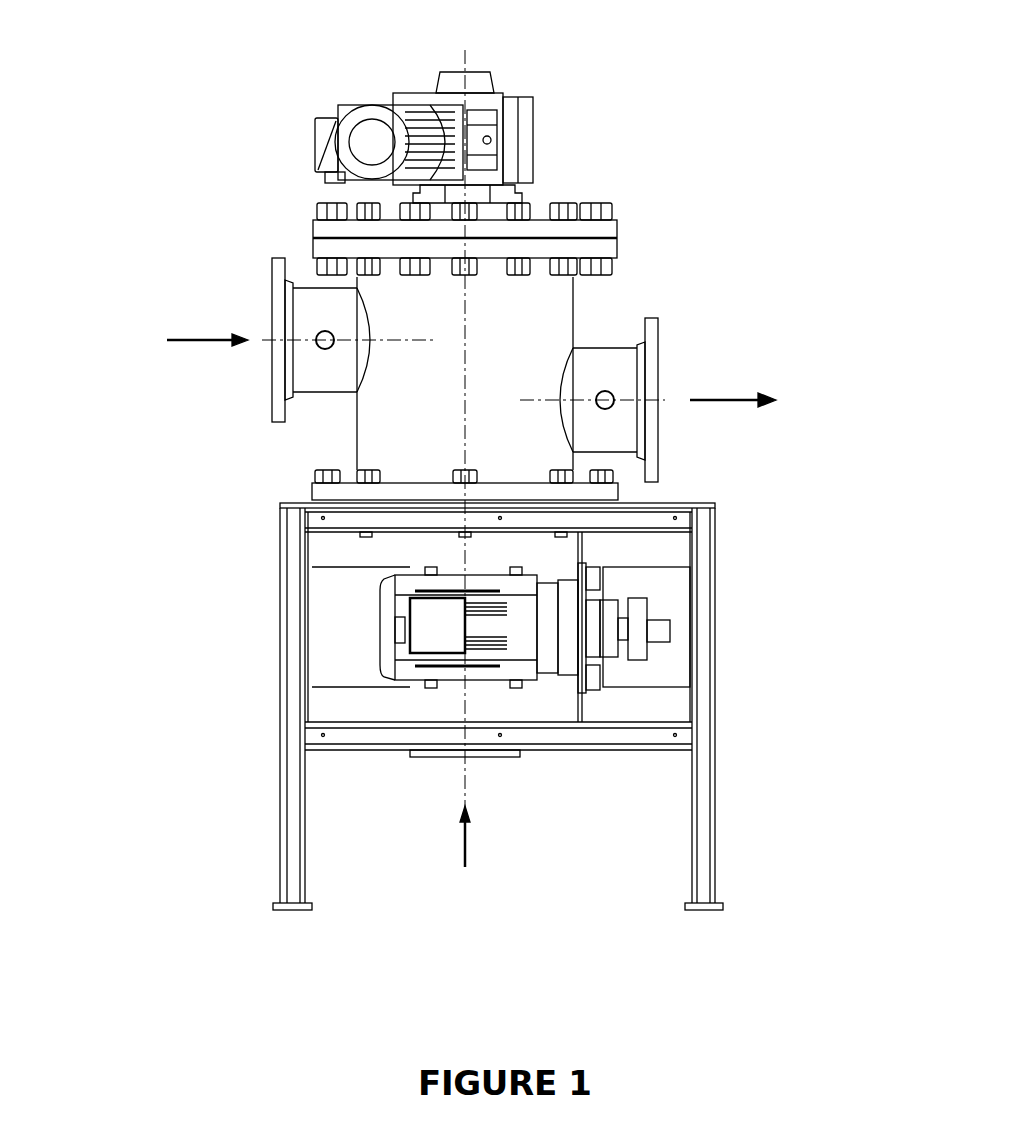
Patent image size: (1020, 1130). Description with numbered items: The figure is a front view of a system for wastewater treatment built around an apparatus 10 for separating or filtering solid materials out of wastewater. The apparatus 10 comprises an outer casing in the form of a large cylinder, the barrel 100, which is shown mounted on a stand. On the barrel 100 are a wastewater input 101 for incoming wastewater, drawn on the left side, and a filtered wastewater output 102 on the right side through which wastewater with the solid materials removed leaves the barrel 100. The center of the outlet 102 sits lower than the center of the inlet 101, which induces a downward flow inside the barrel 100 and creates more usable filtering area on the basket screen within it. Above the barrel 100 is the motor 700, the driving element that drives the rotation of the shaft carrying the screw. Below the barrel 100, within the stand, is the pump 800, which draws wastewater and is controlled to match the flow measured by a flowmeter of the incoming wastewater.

The apparatus for wastewater treatment 10 is at (253, 170).
The barrel 100 is at (573, 308).
The wastewater input 101 is at (272, 370).
The filtered wastewater output 102 is at (645, 387).
The motor 700 is at (387, 100).
The pump 800 is at (500, 697).